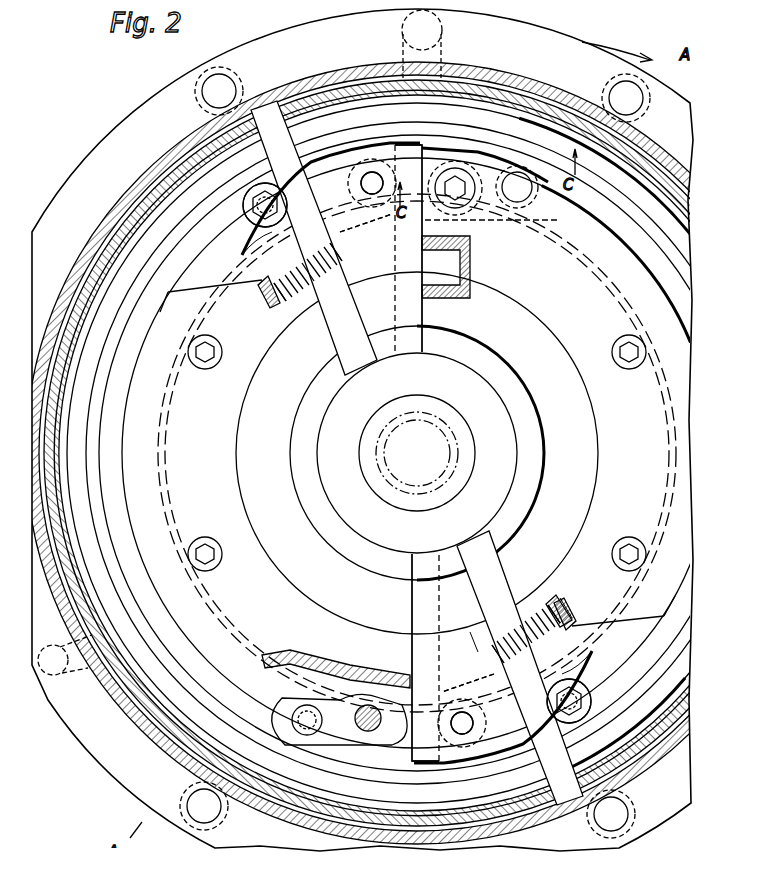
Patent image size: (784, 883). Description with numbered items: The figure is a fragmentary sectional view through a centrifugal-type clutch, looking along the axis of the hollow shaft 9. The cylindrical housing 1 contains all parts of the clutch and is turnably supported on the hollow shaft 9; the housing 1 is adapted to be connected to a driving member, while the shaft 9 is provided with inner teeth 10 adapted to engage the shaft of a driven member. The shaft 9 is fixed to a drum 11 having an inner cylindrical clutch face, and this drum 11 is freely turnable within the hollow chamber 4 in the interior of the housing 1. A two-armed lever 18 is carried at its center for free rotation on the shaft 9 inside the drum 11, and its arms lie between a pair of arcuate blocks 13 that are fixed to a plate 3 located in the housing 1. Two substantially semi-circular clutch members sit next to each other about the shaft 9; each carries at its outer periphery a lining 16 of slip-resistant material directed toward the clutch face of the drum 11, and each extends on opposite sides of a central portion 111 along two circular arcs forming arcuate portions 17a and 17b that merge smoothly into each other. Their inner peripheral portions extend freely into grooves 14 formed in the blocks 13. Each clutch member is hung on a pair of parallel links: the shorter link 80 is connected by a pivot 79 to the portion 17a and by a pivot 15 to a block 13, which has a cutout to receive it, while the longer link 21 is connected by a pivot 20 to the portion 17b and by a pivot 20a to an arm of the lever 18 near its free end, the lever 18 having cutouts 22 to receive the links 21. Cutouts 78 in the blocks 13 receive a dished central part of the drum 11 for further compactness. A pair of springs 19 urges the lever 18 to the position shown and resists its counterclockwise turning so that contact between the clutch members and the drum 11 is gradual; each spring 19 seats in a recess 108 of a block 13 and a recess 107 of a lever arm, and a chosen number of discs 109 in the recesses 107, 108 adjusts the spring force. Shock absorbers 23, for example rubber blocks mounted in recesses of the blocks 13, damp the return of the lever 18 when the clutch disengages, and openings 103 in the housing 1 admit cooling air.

The housing 1 is at (300, 40).
The plate 3 is at (266, 72).
The hollow chamber 4 is at (537, 82).
The hollow shaft 9 is at (462, 447).
The inner teeth 10 is at (462, 447).
The drum 11 is at (163, 230).
The arcuate blocks 13 is at (417, 577).
The grooves 14 is at (215, 302).
The pivots 15 is at (462, 200).
The lining 16 is at (137, 187).
The arcuate portion 17a is at (612, 272).
The arcuate portion 17b is at (417, 449).
The two-armed lever 18 is at (415, 453).
The springs 19 is at (332, 285).
The pivots 20 is at (243, 212).
The pivots 20a is at (374, 196).
The link 21 is at (306, 226).
The cutouts 22 is at (364, 232).
The shock absorbers 23 is at (466, 255).
The cutouts 78 is at (300, 455).
The pivots 79 is at (520, 204).
The link 80 is at (537, 196).
The openings 103 is at (445, 27).
The recess 107 is at (474, 622).
The recess 108 is at (548, 590).
The discs 109 is at (566, 592).
The central portion 111 is at (118, 588).